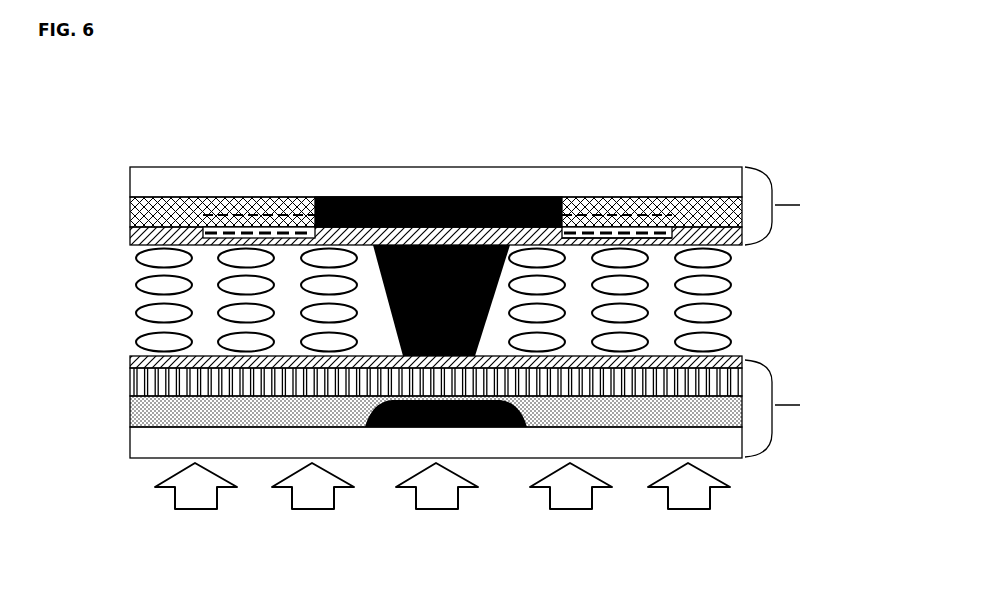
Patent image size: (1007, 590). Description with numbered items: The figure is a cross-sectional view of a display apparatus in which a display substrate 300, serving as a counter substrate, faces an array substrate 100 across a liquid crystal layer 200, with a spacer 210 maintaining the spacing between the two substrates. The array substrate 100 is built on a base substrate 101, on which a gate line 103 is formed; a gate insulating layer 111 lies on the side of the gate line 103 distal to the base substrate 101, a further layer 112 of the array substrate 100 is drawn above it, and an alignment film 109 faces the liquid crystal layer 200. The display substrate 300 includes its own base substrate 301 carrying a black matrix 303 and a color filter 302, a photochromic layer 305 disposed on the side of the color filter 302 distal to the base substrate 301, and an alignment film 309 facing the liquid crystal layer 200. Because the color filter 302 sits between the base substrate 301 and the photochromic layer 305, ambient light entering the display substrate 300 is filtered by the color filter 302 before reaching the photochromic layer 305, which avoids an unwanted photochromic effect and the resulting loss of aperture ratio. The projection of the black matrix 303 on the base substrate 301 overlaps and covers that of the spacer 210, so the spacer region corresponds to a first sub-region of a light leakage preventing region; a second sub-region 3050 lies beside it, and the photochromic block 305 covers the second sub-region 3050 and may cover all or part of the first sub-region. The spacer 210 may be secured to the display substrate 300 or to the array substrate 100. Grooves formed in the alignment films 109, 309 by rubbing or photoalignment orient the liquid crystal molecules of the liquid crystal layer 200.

The array substrate 100 is at (794, 408).
The base substrate 101 is at (165, 437).
The gate line 103 is at (480, 415).
The alignment film 109 is at (728, 358).
The gate insulating layer 111 is at (245, 420).
The pixel structure layer 112 is at (602, 380).
The liquid crystal layer 200 is at (715, 310).
The spacer 210 is at (460, 228).
The display substrate 300 is at (794, 206).
The base substrate 301 is at (143, 183).
The color filter 302 is at (210, 200).
The black matrix 303 is at (390, 200).
The photochromic layer 305 is at (543, 237).
The second sub-region 3050 is at (284, 212).
The alignment film 309 is at (733, 245).